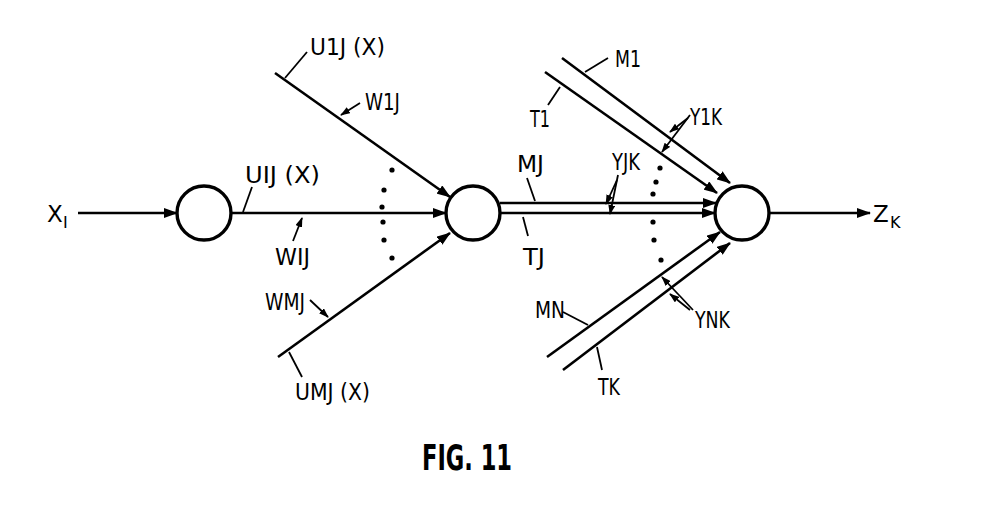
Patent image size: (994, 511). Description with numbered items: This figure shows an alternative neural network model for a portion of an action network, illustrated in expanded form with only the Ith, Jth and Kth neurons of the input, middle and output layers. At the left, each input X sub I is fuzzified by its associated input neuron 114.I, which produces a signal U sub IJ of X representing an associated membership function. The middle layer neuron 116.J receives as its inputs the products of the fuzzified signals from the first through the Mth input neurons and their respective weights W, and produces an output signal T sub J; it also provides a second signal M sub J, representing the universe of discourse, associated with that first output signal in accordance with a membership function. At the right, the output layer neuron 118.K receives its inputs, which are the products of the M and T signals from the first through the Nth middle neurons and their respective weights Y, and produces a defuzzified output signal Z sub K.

The input neuron 114.I is at (197, 239).
The middle layer neuron 116.J is at (472, 239).
The output layer neuron 118.K is at (760, 232).